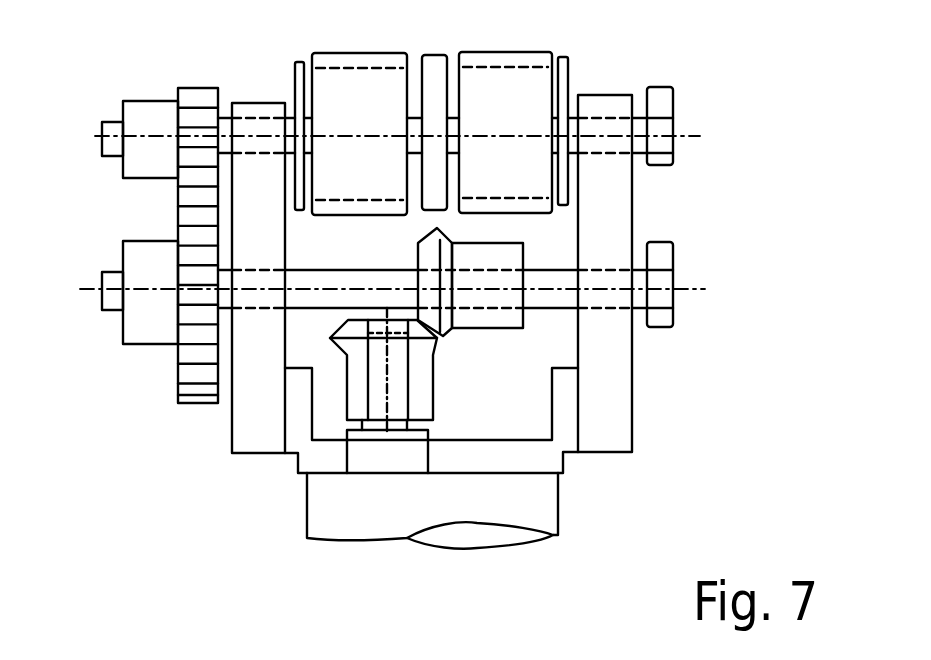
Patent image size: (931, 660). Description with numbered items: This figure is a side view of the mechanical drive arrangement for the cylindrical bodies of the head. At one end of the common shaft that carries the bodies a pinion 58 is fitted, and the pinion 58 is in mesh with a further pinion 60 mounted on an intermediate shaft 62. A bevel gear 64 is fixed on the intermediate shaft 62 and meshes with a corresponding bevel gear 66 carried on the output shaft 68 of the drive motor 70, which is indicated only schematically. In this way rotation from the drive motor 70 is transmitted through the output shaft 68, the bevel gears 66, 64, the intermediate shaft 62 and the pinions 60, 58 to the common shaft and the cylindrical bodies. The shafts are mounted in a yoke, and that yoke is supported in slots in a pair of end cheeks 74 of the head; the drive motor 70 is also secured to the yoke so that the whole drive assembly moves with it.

The pinion 58 is at (190, 95).
The further pinion 60 is at (205, 392).
The intermediate shaft 62 is at (555, 280).
The bevel gear 64 is at (498, 318).
The corresponding bevel gear 66 is at (405, 372).
The output shaft 68 is at (405, 402).
The drive motor 70 is at (545, 517).
The end cheeks 74 is at (608, 110).